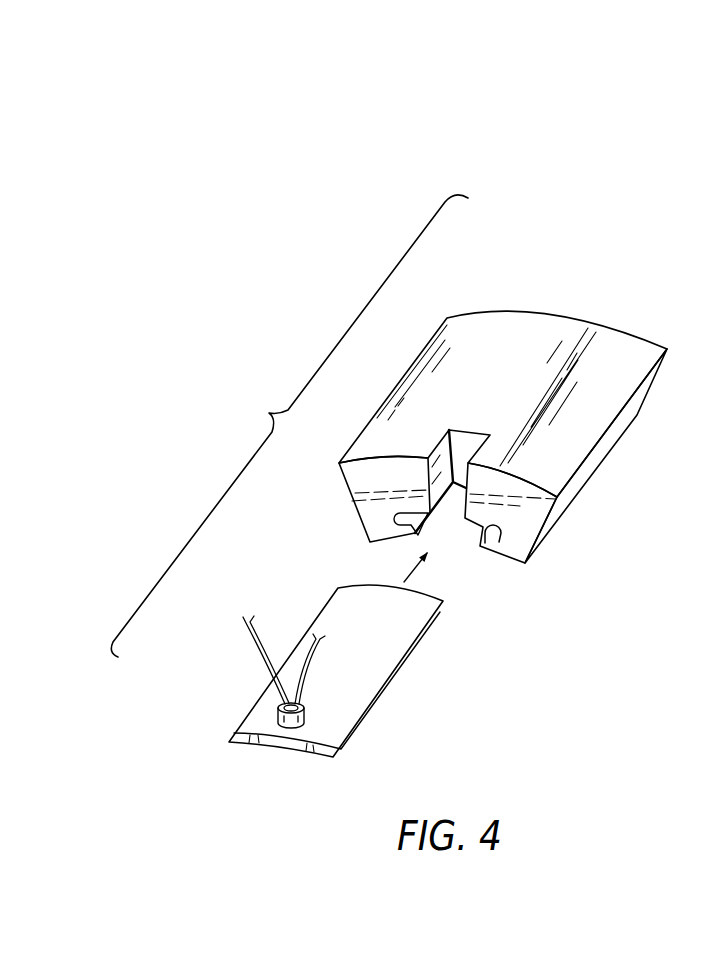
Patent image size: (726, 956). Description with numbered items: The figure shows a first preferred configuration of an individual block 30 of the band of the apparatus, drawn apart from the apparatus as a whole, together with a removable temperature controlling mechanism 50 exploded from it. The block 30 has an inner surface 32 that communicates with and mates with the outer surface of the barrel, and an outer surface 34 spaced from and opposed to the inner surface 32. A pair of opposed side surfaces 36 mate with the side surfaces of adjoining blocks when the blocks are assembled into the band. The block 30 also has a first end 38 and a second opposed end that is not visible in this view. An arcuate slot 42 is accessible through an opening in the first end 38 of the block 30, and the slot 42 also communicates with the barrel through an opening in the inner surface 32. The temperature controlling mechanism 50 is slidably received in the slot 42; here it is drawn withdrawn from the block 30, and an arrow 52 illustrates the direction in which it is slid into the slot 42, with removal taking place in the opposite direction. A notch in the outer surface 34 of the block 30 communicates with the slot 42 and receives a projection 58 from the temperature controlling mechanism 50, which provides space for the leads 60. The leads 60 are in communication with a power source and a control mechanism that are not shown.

The block 30 is at (569, 246).
The inner surface 32 is at (507, 560).
The outer surface 34 is at (628, 348).
The side surfaces 36 is at (597, 463).
The first end 38 is at (357, 477).
The arcuate slot 42 is at (416, 528).
The temperature controlling mechanism 50 is at (363, 660).
The arrow 52 is at (411, 572).
The projection 58 is at (282, 727).
The leads 60 is at (260, 640).